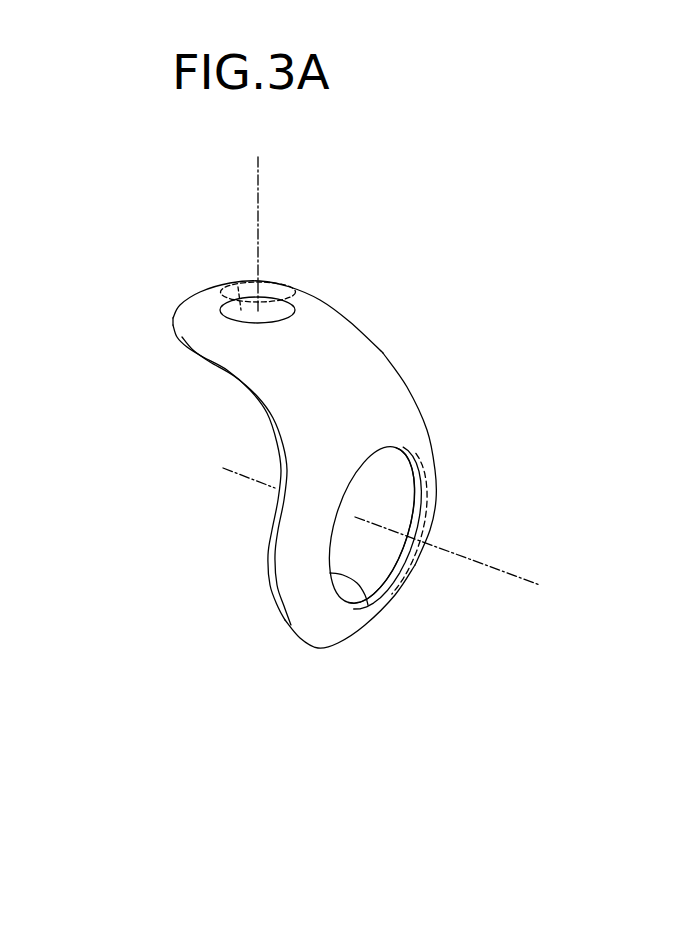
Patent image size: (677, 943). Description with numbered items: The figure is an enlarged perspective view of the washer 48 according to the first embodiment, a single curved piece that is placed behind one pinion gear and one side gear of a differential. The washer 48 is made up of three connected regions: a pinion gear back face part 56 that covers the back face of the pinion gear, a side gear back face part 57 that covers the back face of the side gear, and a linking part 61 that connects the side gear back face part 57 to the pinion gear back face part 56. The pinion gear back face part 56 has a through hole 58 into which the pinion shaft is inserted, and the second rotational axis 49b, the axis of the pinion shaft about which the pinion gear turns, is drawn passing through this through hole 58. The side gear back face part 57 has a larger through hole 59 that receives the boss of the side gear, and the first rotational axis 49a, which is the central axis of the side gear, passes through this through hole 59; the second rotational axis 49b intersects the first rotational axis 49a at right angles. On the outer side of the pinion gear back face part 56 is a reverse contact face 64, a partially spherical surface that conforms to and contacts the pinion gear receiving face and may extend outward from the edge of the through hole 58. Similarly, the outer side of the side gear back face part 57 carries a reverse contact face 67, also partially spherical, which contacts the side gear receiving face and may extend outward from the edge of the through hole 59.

The washer 48 is at (349, 263).
The first rotational axis 49a is at (505, 575).
The second rotational axis 49b is at (258, 183).
The pinion gear back face part 56 is at (198, 352).
The side gear back face part 57 is at (268, 587).
The through hole 58 is at (238, 287).
The through hole 59 is at (367, 584).
The linking part 61 is at (393, 393).
The reverse contact face 64 is at (200, 327).
The reverse contact face 67 is at (295, 613).